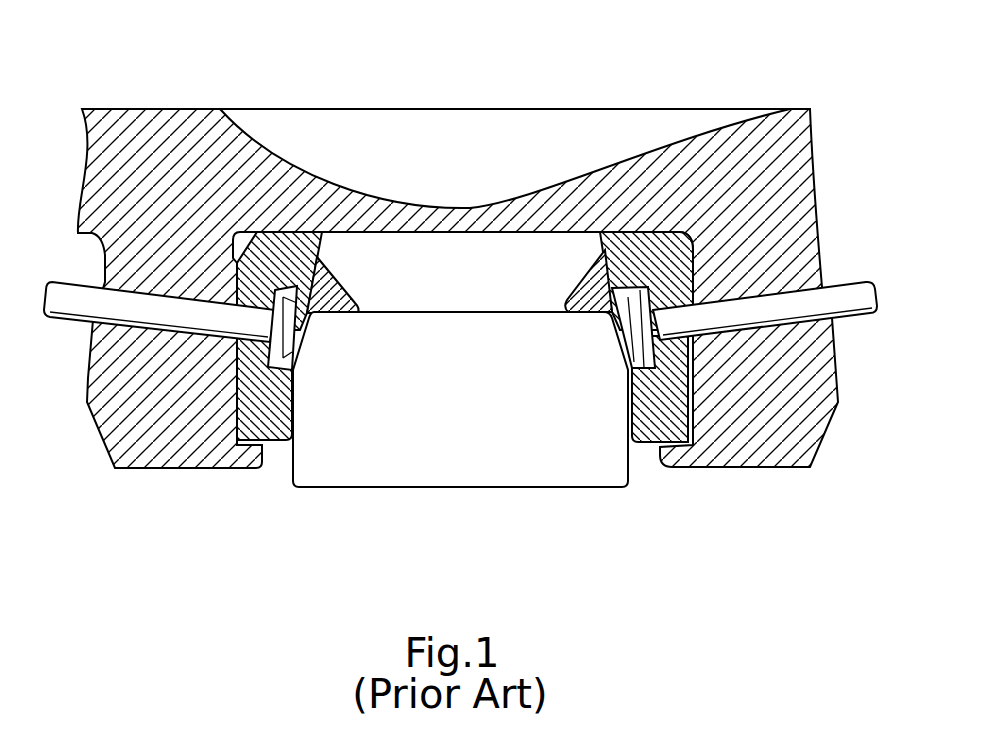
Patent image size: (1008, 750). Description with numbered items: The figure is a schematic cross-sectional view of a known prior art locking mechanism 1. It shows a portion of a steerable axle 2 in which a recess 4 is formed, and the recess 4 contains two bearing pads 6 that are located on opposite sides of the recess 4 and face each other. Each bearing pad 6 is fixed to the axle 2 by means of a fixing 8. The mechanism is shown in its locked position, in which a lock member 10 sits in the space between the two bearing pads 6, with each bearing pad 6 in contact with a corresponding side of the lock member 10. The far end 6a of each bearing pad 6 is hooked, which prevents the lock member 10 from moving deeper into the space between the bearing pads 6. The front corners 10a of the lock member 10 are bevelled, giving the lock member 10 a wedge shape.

The locking mechanism 1 is at (720, 548).
The steerable axle 2 is at (763, 197).
The recess 4 is at (508, 253).
The bearing pads 6 is at (262, 422).
The far end 6a is at (318, 257).
The fixing 8 is at (805, 307).
The lock member 10 is at (470, 407).
The front corners 10a is at (307, 312).